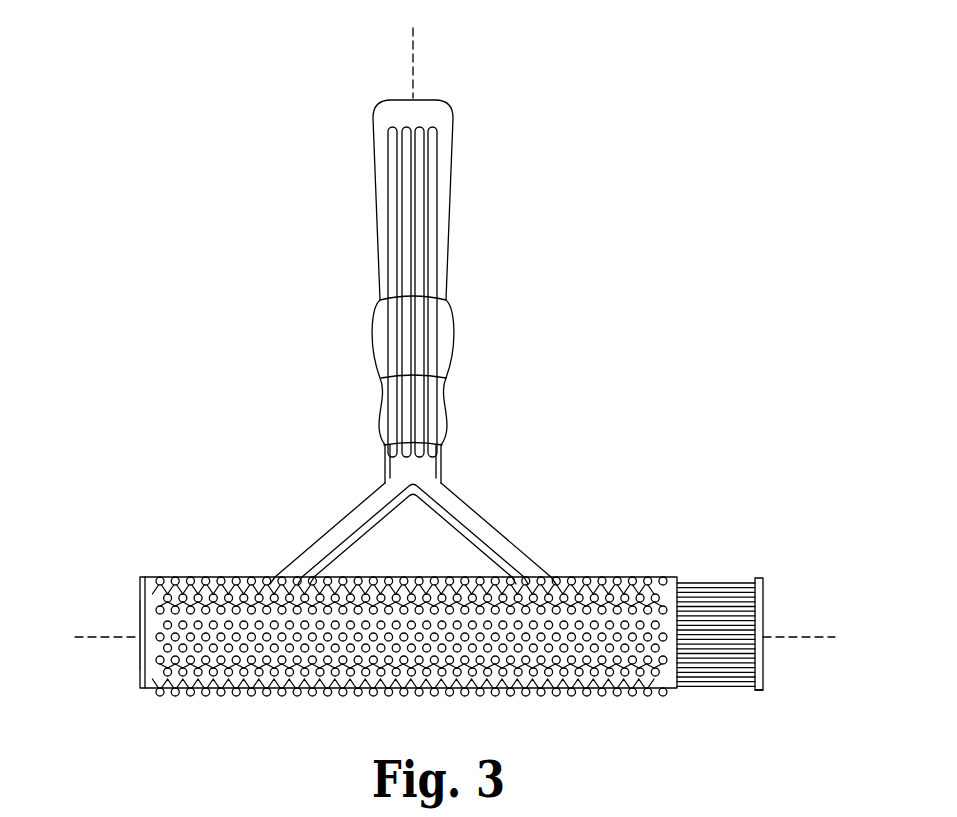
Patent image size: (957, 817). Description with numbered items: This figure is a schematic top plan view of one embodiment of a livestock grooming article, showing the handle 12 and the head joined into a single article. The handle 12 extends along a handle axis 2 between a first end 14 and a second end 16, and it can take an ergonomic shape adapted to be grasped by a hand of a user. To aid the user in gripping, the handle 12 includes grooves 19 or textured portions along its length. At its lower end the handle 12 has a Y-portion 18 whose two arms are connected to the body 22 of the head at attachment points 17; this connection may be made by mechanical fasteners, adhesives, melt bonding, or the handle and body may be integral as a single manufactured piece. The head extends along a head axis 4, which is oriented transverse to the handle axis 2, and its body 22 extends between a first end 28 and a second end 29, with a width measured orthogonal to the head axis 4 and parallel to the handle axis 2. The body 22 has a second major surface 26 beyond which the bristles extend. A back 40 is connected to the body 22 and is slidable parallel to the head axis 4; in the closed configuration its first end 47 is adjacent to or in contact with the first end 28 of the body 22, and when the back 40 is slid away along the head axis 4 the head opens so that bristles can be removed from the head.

The handle axis 2 is at (411, 50).
The head axis 4 is at (822, 636).
The handle 12 is at (378, 267).
The first end 14 is at (276, 573).
The second end 16 is at (437, 103).
The attachment points 17 is at (318, 577).
The Y-portion 18 is at (389, 511).
The grooves 19 is at (438, 180).
The body 22 is at (376, 671).
The second major surface 26 is at (148, 590).
The first end 28 is at (692, 689).
The second end 29 is at (141, 674).
The back 40 is at (758, 578).
The first end 47 is at (763, 690).